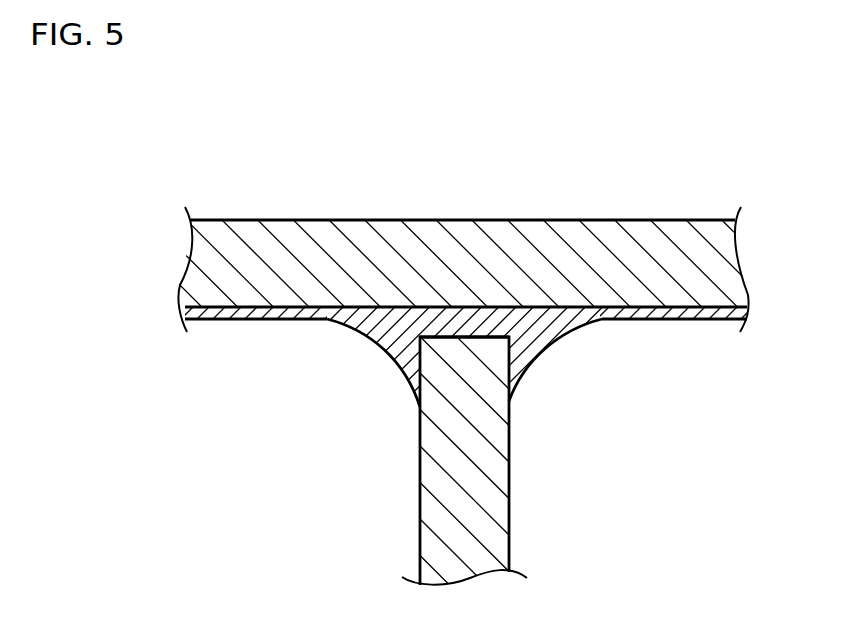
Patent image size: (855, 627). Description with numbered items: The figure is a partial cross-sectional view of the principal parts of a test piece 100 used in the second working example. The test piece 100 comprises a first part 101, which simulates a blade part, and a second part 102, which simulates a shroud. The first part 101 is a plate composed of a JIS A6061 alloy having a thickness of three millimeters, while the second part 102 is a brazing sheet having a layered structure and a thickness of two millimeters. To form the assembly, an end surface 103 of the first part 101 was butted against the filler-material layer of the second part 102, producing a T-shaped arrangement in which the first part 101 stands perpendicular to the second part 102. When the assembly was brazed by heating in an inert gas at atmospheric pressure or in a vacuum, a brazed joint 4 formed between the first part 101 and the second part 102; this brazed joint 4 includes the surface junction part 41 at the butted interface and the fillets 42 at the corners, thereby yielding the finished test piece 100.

The test piece 100 is at (695, 122).
The first part 101 is at (480, 487).
The second part 102 is at (538, 243).
The end surface 103 is at (500, 333).
The brazed joint 4 is at (370, 128).
The surface junction part 41 is at (459, 312).
The fillets 42 is at (402, 330).